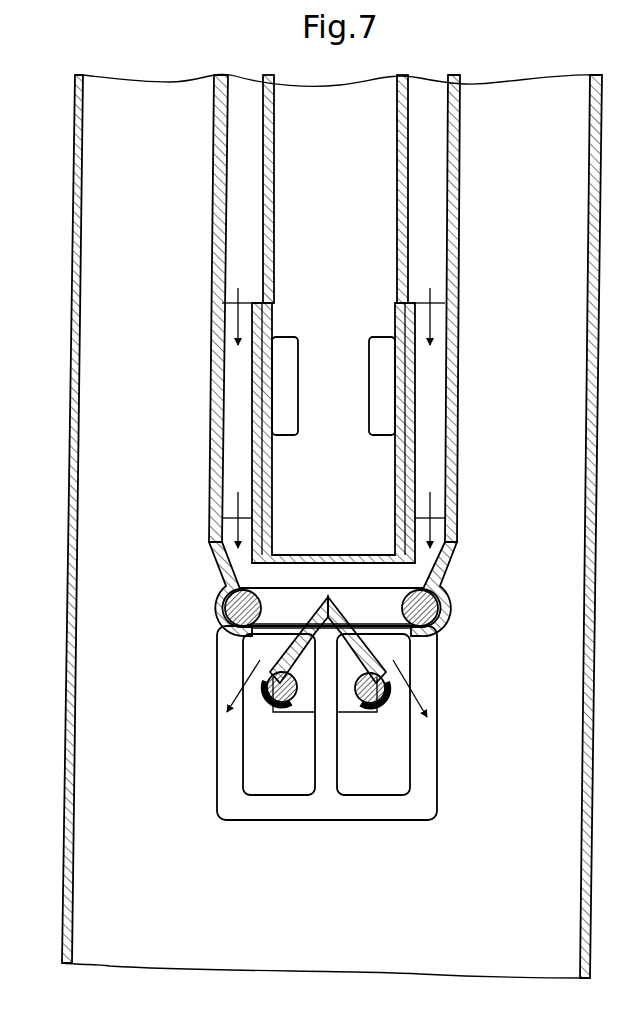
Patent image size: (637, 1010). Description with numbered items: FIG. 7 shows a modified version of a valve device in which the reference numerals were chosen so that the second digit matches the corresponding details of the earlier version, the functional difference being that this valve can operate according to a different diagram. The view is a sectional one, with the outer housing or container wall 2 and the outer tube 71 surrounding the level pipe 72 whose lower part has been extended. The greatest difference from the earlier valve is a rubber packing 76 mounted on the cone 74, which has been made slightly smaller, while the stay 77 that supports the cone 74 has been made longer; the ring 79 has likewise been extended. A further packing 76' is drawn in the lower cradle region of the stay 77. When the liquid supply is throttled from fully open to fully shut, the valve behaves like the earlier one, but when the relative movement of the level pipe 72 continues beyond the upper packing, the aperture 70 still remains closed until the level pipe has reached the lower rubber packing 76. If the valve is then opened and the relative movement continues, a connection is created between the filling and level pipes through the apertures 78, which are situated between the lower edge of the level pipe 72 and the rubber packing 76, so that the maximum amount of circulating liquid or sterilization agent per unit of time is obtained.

The container wall 2 is at (68, 540).
The aperture 70 is at (262, 584).
The outer tube 71 is at (218, 437).
The level pipe 72 is at (262, 486).
The cone 74 is at (320, 618).
The rubber packing 76 is at (312, 589).
The lower sealing ring 76' is at (280, 677).
The stay 77 is at (222, 782).
The apertures 78 is at (292, 340).
The ring 79 is at (253, 384).